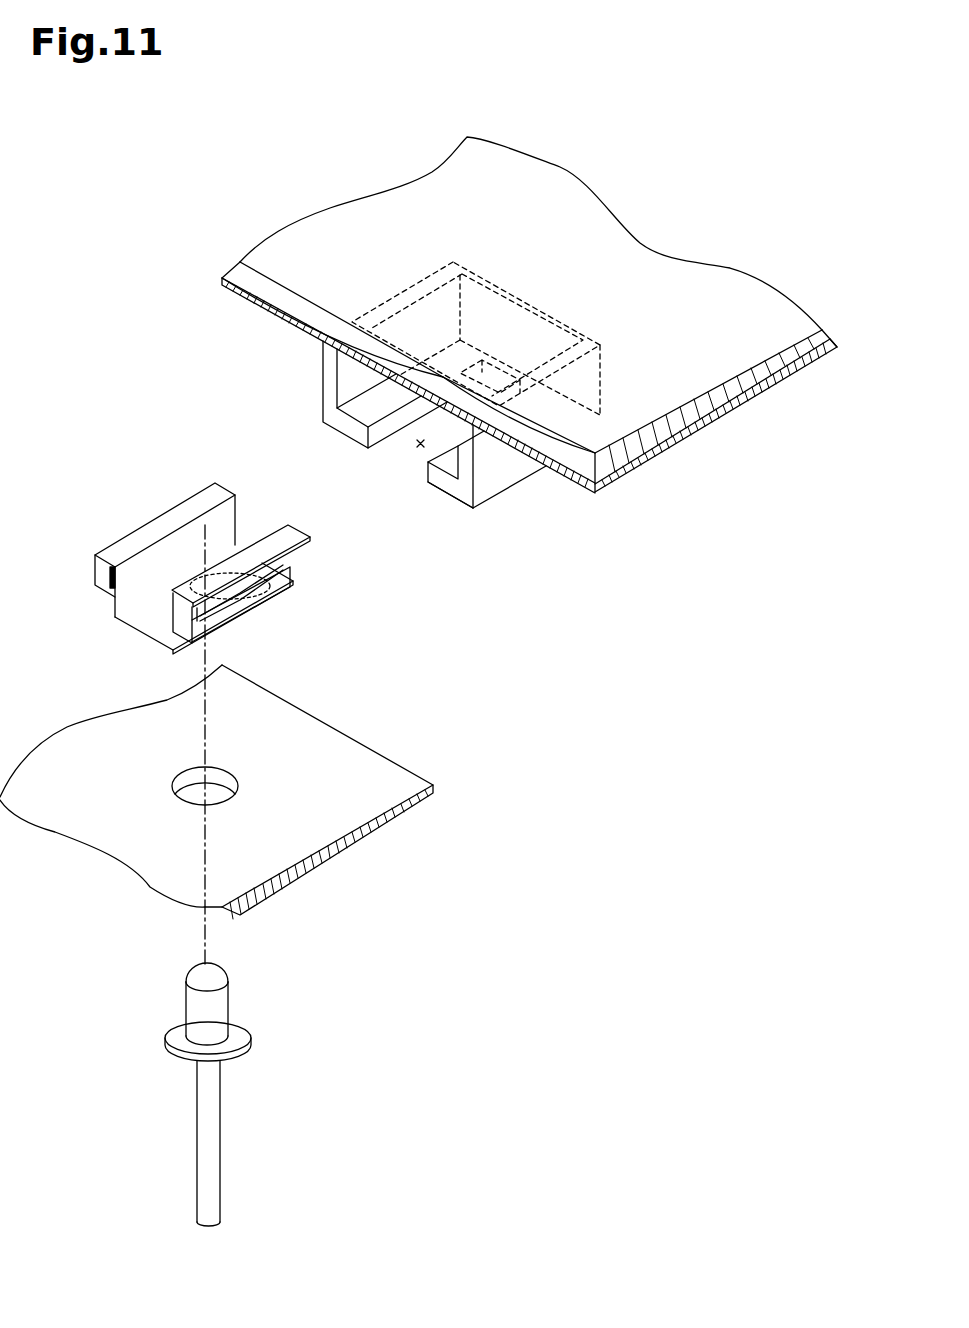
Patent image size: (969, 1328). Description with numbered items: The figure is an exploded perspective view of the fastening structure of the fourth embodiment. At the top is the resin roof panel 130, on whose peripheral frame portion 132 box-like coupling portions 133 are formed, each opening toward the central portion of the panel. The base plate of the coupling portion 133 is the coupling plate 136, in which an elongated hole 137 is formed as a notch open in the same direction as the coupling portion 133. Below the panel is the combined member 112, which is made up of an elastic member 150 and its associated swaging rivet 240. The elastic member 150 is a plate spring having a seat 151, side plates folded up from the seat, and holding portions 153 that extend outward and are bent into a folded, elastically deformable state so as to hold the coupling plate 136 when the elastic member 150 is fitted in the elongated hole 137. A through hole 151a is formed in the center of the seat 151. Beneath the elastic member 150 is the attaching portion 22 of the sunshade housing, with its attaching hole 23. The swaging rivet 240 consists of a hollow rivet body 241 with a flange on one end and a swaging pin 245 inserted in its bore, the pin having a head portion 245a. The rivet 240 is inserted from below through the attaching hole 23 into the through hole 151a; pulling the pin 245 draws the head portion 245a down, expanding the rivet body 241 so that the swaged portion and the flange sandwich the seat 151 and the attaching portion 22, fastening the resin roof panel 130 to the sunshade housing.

The resin roof panel 130 is at (318, 212).
The peripheral frame portion 132 is at (288, 316).
The coupling portion 133 is at (503, 496).
The coupling plate 136 is at (447, 480).
The elongated hole 137 is at (420, 443).
The combined member 112 is at (192, 485).
The elastic member 150 is at (288, 525).
The seat 151 is at (150, 618).
The through hole 151a is at (285, 588).
The holding portion 153 is at (103, 590).
The attaching portion 22 is at (348, 755).
The attaching hole 23 is at (236, 793).
The swaging rivet 240 is at (174, 1088).
The rivet body 241 is at (219, 1007).
The swaging pin 245 is at (210, 1110).
The head portion 245a is at (218, 976).